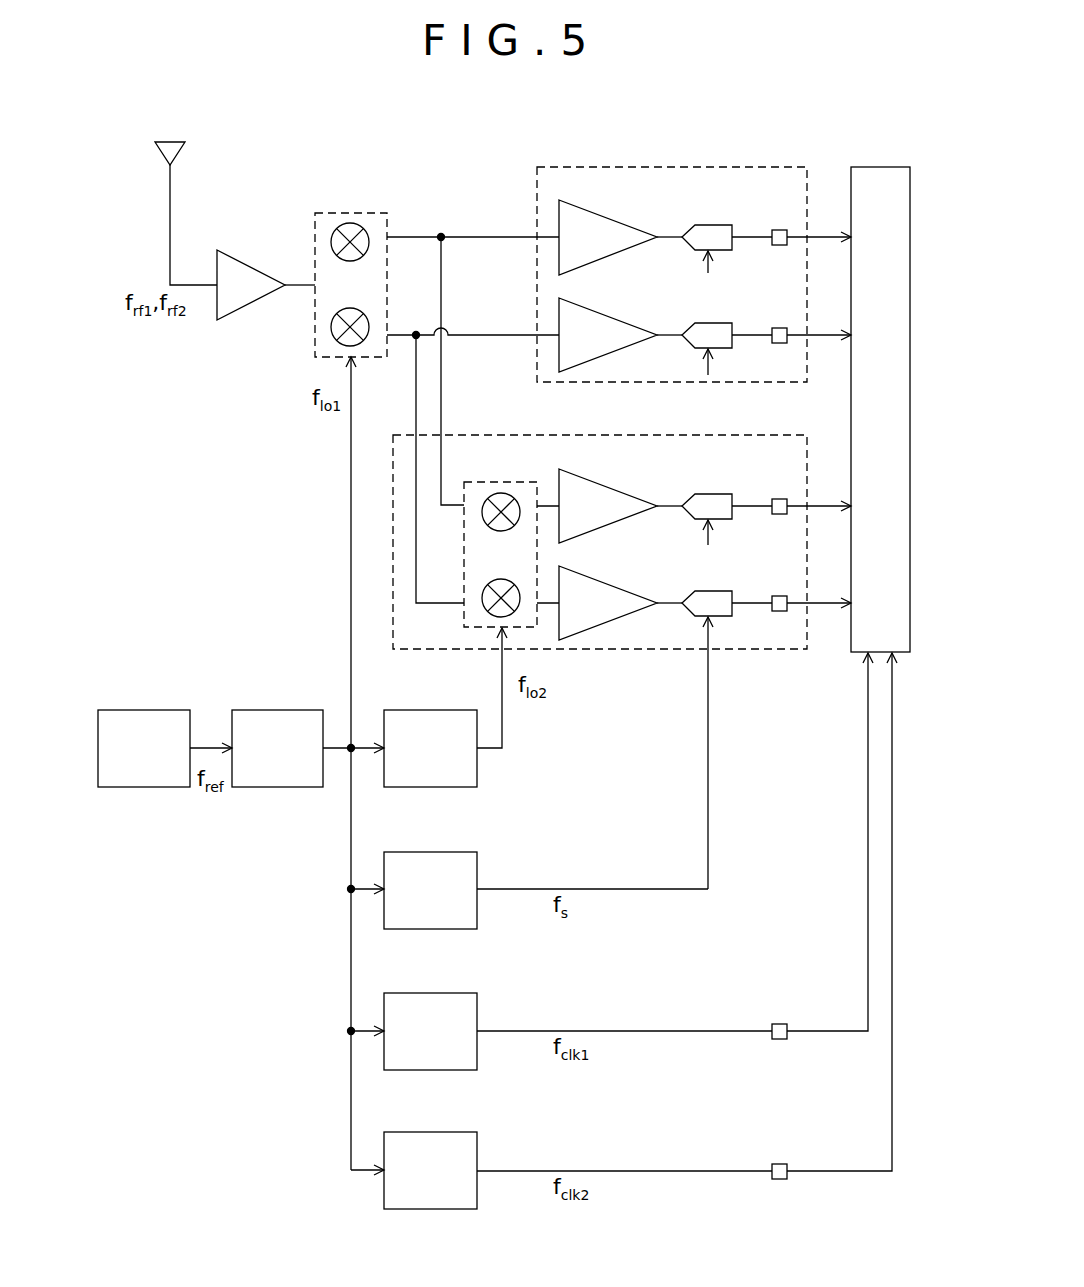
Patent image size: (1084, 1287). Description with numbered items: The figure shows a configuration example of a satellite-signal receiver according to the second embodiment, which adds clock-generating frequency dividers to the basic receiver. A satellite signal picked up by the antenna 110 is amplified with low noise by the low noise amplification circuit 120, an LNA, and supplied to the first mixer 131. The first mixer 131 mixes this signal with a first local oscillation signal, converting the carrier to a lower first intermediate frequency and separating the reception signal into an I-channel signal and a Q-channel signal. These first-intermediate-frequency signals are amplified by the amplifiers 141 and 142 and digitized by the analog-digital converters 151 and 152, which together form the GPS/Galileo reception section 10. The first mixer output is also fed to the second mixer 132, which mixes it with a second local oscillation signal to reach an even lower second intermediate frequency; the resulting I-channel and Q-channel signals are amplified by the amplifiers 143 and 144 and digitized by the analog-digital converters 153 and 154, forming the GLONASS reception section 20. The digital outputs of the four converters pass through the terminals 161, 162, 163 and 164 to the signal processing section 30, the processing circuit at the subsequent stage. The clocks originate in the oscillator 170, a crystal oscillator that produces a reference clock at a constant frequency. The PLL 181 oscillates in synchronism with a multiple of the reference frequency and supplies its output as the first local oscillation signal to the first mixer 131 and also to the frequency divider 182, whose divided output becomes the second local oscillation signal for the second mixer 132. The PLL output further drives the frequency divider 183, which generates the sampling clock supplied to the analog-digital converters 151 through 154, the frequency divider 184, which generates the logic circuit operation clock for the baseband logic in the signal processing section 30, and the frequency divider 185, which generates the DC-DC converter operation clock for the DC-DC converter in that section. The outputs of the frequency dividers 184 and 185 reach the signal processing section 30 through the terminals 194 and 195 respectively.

The GPS/Galileo reception section 10 is at (752, 166).
The GLONASS reception section 20 is at (752, 434).
The signal processing section 30 is at (879, 166).
The antenna 110 is at (171, 141).
The low noise amplification circuit 120 is at (249, 264).
The first mixer 131 is at (352, 212).
The second mixer 132 is at (503, 481).
The amplifier 141 is at (612, 214).
The amplifier 142 is at (612, 313).
The amplifier 143 is at (612, 483).
The amplifier 144 is at (612, 581).
The analog-digital converter 151 is at (710, 224).
The analog-digital converter 152 is at (721, 322).
The analog-digital converter 153 is at (710, 493).
The analog-digital converter 154 is at (721, 590).
The terminal 161 is at (779, 229).
The terminal 162 is at (779, 327).
The terminal 163 is at (779, 498).
The terminal 164 is at (779, 595).
The oscillator 170 is at (146, 709).
The PLL 181 is at (278, 709).
The frequency divider 182 is at (434, 709).
The frequency divider 183 is at (434, 851).
The frequency divider 184 is at (434, 992).
The frequency divider 185 is at (434, 1131).
The terminal 194 is at (779, 1023).
The terminal 195 is at (779, 1163).